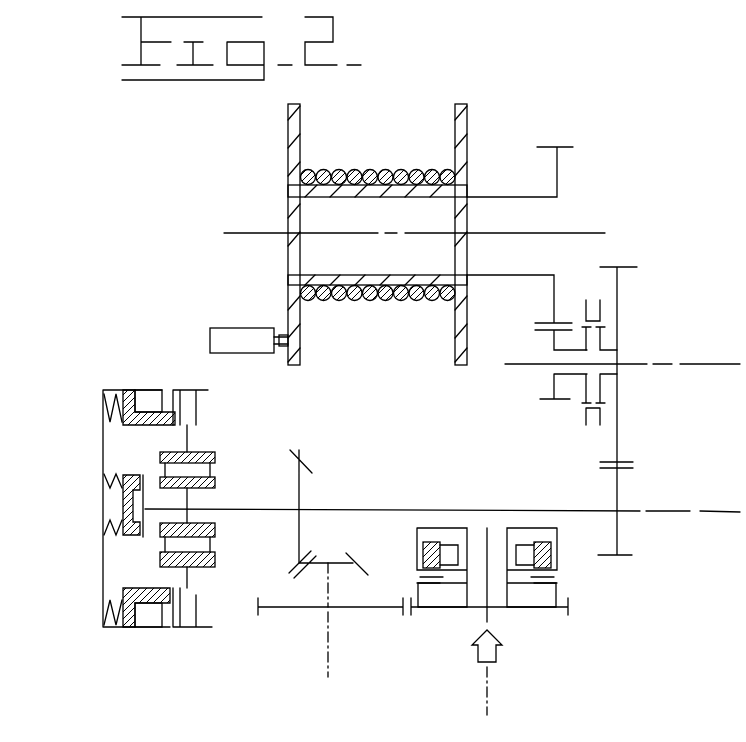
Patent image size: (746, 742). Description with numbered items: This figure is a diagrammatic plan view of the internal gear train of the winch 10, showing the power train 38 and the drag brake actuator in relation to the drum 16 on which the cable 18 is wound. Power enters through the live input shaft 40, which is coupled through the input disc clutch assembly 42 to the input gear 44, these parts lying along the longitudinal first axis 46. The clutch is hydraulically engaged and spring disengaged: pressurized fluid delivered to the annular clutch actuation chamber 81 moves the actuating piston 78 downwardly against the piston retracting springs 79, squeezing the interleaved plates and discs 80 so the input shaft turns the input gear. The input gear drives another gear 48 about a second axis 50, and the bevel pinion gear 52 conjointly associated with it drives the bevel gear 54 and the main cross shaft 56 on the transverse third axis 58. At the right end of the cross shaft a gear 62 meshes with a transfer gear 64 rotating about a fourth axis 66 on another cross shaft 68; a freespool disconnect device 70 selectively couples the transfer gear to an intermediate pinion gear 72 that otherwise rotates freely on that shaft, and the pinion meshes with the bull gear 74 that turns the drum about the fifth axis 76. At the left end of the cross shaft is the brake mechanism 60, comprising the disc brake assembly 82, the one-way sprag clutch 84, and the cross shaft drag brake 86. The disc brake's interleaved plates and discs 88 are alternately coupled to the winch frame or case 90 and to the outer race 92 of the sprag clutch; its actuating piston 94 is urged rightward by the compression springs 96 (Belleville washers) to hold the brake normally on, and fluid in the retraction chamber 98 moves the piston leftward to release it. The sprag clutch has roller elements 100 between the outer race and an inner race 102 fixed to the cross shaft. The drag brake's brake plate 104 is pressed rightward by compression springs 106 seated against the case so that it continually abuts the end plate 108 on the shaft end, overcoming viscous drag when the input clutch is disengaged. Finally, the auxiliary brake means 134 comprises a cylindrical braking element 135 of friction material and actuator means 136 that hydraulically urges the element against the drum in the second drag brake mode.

The winch 10 is at (588, 158).
The drum 16 is at (288, 140).
The cable 18 is at (383, 176).
The power train 38 is at (623, 494).
The live input shaft 40 is at (495, 607).
The input disc clutch assembly 42 is at (574, 565).
The input gear 44 is at (420, 610).
The longitudinal first axis 46 is at (490, 703).
The gear 48 is at (283, 610).
The second axis 50 is at (313, 628).
The bevel pinion gear 52 is at (350, 560).
The bevel gear 54 is at (299, 452).
The main cross shaft 56 is at (328, 508).
The transverse third axis 58 is at (726, 515).
The brake mechanism 60 is at (147, 372).
The gear 62 is at (613, 472).
The transfer gear 64 is at (620, 268).
The fourth axis 66 is at (700, 362).
The cross shaft 68 is at (538, 366).
The freespool disconnect device 70 is at (593, 297).
The intermediate pinion gear 72 is at (553, 327).
The bull gear 74 is at (553, 150).
The fifth axis 76 is at (270, 232).
The actuating piston 78 is at (533, 540).
The piston retracting springs 79 is at (452, 540).
The interleaved plates and discs 80 is at (410, 583).
The annular clutch actuation chamber 81 is at (425, 532).
The disc brake assembly 82 is at (98, 409).
The one-way sprag clutch 84 is at (217, 468).
The cross shaft drag brake 86 is at (100, 543).
The interleaved plates and discs 88 is at (201, 407).
The winch frame or case 90 is at (152, 390).
The outer race 92 is at (215, 566).
The actuating piston 94 is at (130, 630).
The compression springs 96 is at (104, 606).
The retraction chamber 98 is at (150, 630).
The roller elements 100 is at (200, 547).
The inner race 102 is at (216, 485).
The brake plate 104 is at (123, 508).
The compression springs 106 is at (123, 478).
The end plate 108 is at (143, 525).
The auxiliary brake means 134 is at (185, 263).
The cylindrical braking element 135 is at (282, 335).
The actuator means 136 is at (206, 342).